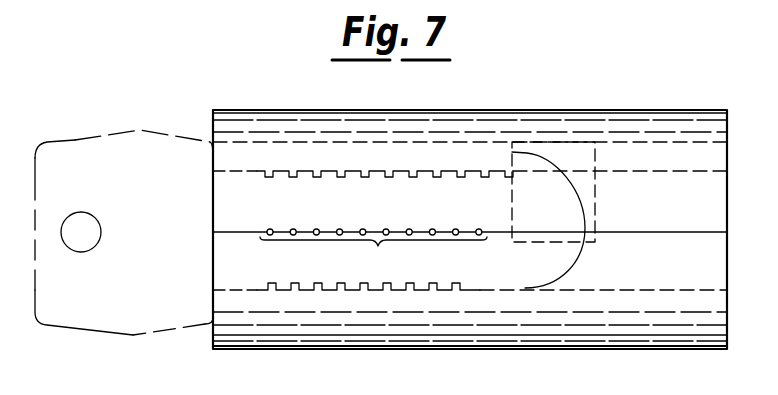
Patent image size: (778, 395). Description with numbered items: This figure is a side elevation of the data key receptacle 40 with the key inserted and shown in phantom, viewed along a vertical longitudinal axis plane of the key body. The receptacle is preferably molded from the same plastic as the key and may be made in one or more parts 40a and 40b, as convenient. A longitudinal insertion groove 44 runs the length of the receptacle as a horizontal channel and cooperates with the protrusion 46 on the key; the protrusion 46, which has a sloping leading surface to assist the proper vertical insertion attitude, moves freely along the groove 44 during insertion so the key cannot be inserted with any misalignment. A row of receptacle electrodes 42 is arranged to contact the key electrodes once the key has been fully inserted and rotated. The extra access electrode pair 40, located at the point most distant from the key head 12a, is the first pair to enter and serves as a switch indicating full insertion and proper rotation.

The data key head 12a is at (77, 140).
The data key receptacle 40 is at (480, 228).
The receptacle part 40a is at (667, 110).
The receptacle part 40b is at (658, 350).
The receptacle electrodes 42 is at (373, 246).
The longitudinal insertion groove 44 is at (398, 157).
The protrusion 46 is at (527, 150).